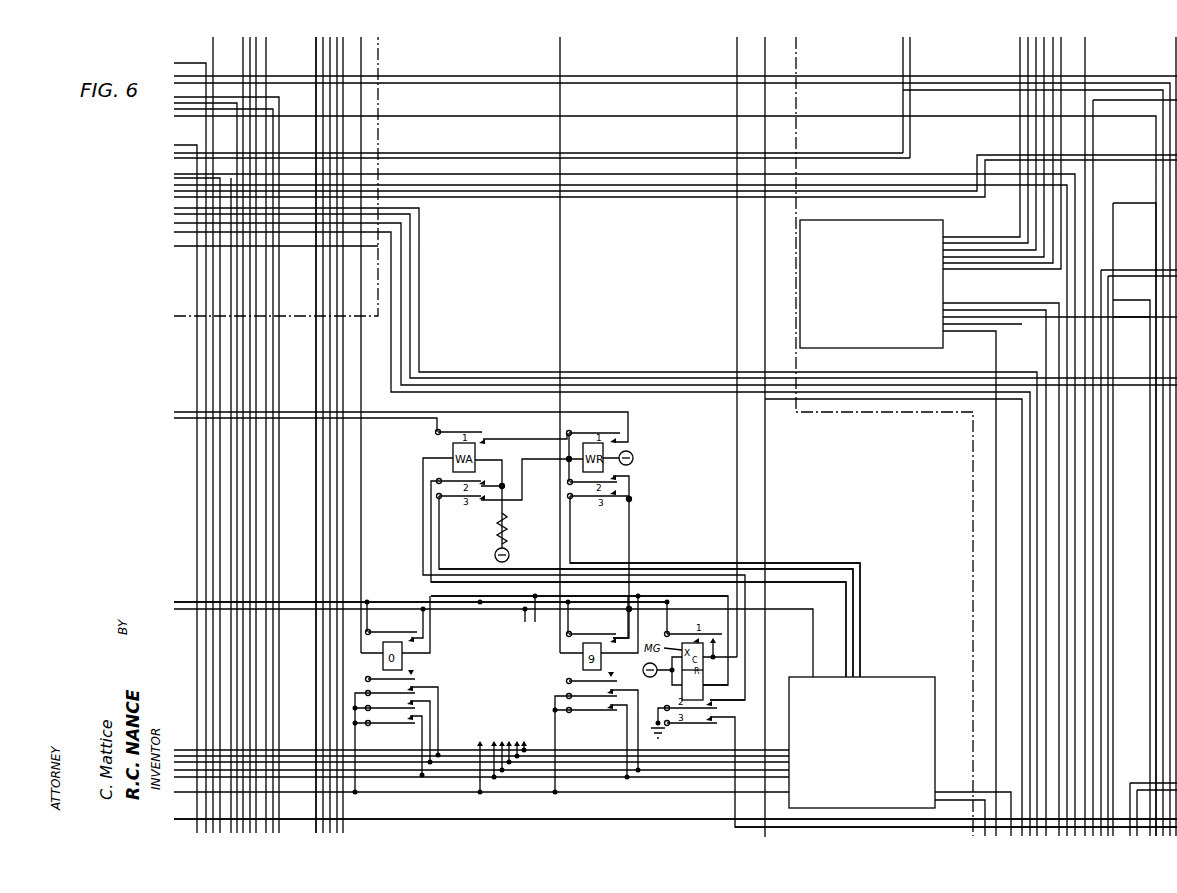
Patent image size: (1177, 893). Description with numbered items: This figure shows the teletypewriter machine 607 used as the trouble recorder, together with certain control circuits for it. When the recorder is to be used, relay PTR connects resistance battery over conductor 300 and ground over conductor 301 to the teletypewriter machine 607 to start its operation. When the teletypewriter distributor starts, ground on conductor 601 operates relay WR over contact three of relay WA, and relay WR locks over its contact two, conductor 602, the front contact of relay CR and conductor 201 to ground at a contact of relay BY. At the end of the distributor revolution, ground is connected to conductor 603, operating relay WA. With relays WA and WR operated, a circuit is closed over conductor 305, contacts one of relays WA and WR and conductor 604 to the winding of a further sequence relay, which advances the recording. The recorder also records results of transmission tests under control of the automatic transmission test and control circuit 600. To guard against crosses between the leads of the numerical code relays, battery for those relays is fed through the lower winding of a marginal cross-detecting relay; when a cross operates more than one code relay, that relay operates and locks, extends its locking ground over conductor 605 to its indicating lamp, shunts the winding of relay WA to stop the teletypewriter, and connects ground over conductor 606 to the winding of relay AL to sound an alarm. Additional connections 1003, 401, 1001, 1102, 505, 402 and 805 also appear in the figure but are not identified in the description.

The automatic transmission test and control circuit 600 is at (872, 222).
The conductor 1003 is at (1115, 203).
The conductor 401 is at (1147, 300).
The conductor 1001 is at (1140, 322).
The conductor 305 is at (388, 420).
The conductor 604 is at (628, 424).
The conductor 605 is at (737, 497).
The conductor 1102 is at (765, 497).
The conductor 201 is at (306, 602).
The conductor 602 is at (402, 609).
The conductor 601 is at (860, 607).
The conductor 603 is at (853, 637).
The teletypewriter machine 607 is at (870, 665).
The conductor 505 is at (316, 713).
The conductor 402 is at (402, 819).
The conductor 606 is at (735, 810).
The conductor 300 is at (960, 792).
The conductor 301 is at (962, 800).
The conductor 805 is at (1136, 783).